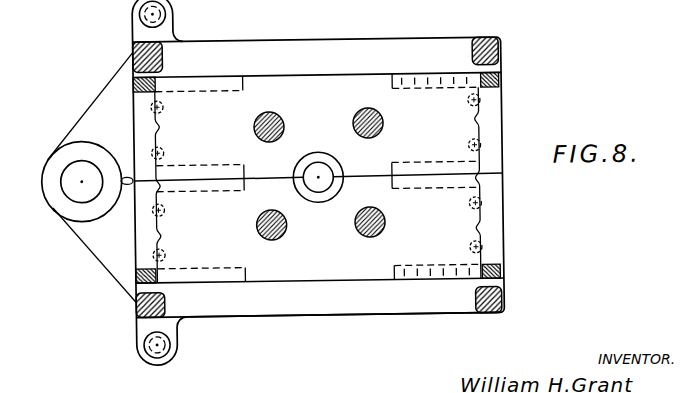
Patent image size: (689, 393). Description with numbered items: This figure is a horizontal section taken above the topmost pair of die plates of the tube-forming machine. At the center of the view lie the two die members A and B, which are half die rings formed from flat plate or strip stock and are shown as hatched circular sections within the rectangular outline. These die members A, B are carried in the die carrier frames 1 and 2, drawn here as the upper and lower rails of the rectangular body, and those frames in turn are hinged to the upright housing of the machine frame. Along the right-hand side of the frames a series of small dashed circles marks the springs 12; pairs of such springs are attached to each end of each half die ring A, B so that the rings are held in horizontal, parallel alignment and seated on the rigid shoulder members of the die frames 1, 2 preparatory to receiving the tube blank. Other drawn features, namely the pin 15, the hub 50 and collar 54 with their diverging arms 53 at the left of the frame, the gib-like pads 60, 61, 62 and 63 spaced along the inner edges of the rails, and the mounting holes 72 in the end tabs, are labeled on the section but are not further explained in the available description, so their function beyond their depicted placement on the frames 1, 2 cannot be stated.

The die carrier frame 1 is at (341, 314).
The die carrier frame 2 is at (390, 40).
The spring 12 is at (482, 102).
The pin 15 is at (281, 101).
The hub 50 is at (72, 189).
The arm 53 is at (87, 229).
The collar 54 is at (48, 157).
The gib 60 is at (466, 267).
The gib 61 is at (440, 189).
The gib 62 is at (463, 164).
The gib 63 is at (449, 87).
The mounting hole 72 is at (142, 11).
The die member A is at (380, 123).
The die member B is at (384, 221).